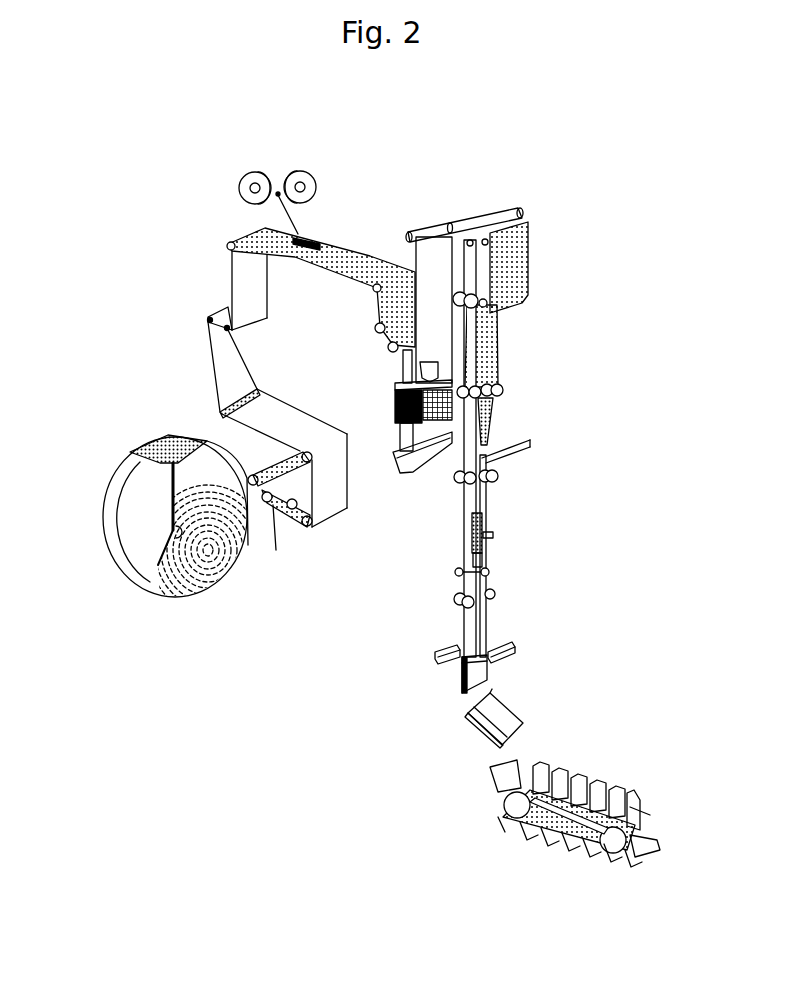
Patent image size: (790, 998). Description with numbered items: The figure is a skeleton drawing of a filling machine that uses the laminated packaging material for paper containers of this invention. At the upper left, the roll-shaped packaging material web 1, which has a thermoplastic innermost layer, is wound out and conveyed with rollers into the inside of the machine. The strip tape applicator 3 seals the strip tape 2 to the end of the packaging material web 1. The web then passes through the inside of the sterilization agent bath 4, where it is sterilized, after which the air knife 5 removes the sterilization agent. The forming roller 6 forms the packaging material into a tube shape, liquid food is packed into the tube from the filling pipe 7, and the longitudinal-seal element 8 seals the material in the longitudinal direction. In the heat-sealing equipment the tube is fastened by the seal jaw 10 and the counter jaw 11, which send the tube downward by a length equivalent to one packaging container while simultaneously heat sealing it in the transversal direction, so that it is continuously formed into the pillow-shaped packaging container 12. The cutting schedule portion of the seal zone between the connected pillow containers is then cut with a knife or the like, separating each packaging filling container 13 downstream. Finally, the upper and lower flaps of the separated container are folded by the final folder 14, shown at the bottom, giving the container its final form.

The packaging material web 1 is at (207, 563).
The strip tape 2 is at (280, 193).
The strip tape applicator 3 is at (316, 240).
The sterilization agent bath 4 is at (405, 473).
The air knife 5 is at (478, 230).
The forming roller 6 is at (500, 385).
The filling pipe 7 is at (510, 440).
The longitudinal-seal element 8 is at (485, 527).
The seal jaw 10 is at (513, 647).
The counter jaw 11 is at (435, 649).
The pillow-shaped packaging container 12 is at (460, 675).
The packaging filling container 13 is at (480, 727).
The final folder 14 is at (503, 790).